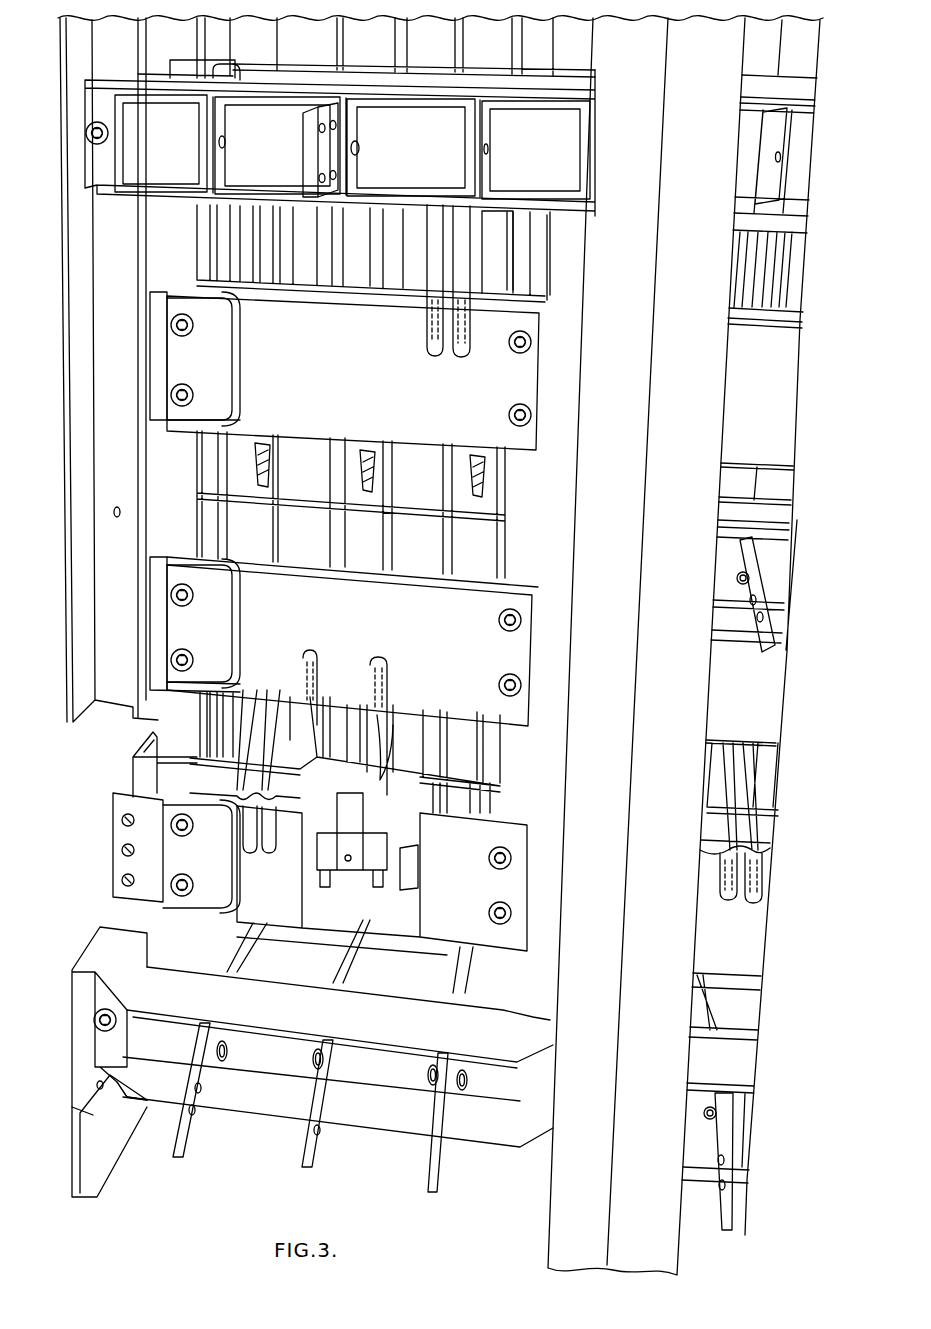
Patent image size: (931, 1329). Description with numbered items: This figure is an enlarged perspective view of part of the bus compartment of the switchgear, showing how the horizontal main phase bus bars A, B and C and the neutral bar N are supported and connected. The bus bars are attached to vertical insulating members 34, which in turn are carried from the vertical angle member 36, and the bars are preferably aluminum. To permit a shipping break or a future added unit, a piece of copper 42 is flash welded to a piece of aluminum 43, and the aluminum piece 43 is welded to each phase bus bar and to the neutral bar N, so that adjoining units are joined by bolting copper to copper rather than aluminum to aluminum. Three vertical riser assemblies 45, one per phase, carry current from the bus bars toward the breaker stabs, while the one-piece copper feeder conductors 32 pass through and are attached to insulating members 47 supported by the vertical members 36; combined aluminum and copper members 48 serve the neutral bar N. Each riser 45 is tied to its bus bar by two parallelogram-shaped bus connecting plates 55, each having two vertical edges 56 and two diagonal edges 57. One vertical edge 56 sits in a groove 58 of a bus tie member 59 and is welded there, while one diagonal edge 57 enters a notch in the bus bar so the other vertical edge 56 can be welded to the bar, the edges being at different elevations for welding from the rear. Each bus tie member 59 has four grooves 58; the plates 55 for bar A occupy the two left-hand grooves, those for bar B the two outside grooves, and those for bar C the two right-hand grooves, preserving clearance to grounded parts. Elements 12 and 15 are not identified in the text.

The column 12 is at (548, 1212).
The channel member 15 is at (73, 1145).
The feeder conductor 32 is at (187, 1140).
The vertical insulating member 34 is at (135, 772).
The vertical angle member 36 is at (95, 705).
The piece of copper 42 is at (153, 68).
The piece of aluminum 43 is at (180, 62).
The vertical riser assembly 45 is at (268, 49).
The insulating member 47 is at (138, 103).
The combined aluminum and copper member 48 is at (302, 140).
The bus connecting plate 55 is at (428, 298).
The vertical edge 56 is at (372, 715).
The diagonal edge 57 is at (234, 747).
The groove 58 is at (487, 249).
The bus tie member 59 is at (225, 230).
The main phase bus bar A is at (368, 379).
The main phase bus bar B is at (358, 634).
The main phase bus bar C is at (283, 891).
The neutral bar N is at (323, 62).